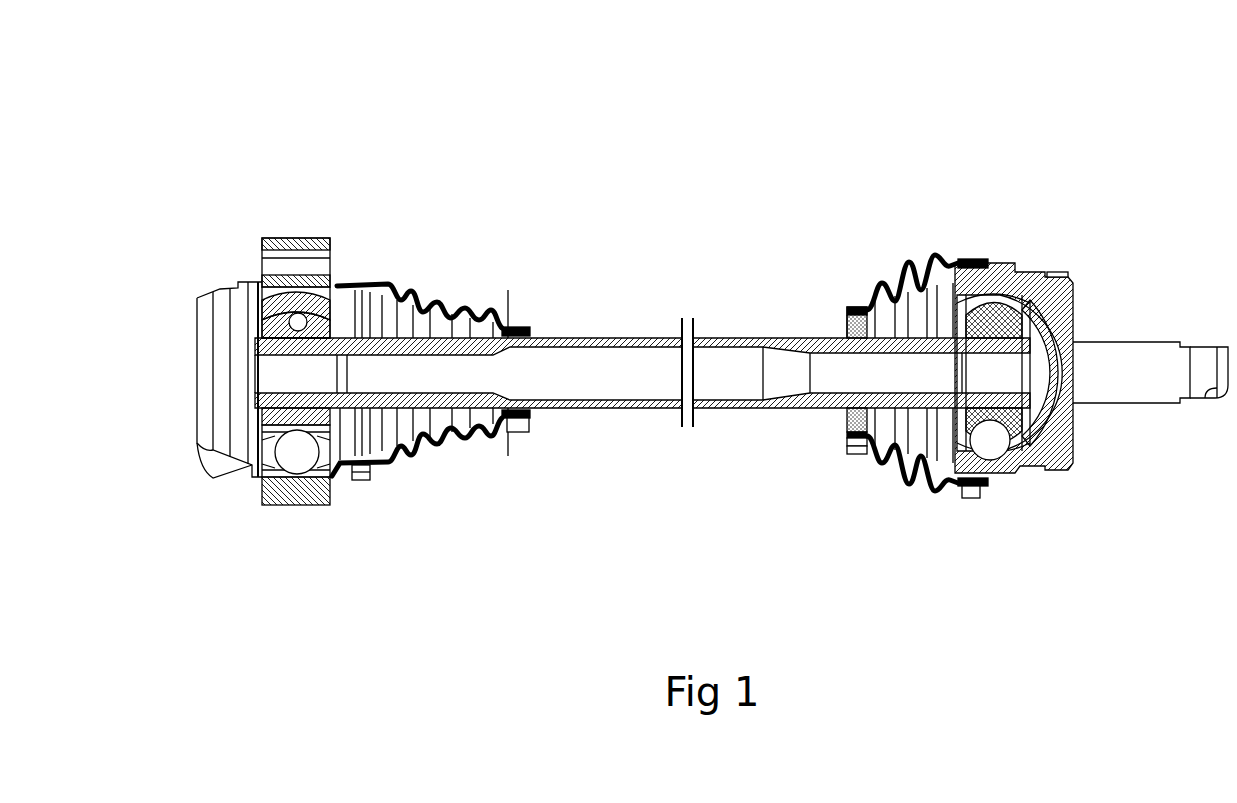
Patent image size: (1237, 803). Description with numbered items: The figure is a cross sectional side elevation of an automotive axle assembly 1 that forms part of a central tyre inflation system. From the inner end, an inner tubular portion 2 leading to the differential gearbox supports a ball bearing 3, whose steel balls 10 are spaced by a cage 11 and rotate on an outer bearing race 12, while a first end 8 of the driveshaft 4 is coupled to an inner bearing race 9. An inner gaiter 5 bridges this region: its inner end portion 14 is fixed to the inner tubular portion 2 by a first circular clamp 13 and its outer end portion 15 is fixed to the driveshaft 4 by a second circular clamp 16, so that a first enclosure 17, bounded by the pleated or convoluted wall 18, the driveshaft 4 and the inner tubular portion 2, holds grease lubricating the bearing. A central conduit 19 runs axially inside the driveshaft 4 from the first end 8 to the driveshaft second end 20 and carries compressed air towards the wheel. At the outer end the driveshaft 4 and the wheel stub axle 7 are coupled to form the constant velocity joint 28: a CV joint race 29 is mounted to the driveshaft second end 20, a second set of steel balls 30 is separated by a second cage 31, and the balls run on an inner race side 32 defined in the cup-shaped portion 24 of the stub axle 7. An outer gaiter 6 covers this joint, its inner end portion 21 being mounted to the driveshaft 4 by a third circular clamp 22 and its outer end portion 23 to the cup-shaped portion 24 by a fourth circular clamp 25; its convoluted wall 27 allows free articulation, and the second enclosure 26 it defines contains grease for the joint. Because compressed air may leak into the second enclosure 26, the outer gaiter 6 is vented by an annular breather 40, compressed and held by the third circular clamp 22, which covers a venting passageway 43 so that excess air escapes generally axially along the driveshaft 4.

The automotive axle assembly 1 is at (719, 100).
The inner tubular portion 2 is at (220, 296).
The ball bearing 3 is at (297, 322).
The driveshaft 4 is at (655, 337).
The inner gaiter 5 is at (428, 296).
The outer gaiter 6 is at (877, 306).
The wheel stub axle 7 is at (1147, 338).
The first end 8 is at (262, 410).
The inner bearing race 9 is at (337, 330).
The steel balls 10 is at (296, 442).
The cage 11 is at (331, 289).
The outer bearing race 12 is at (282, 508).
The first circular clamp 13 is at (362, 481).
The inner end portion 14 is at (384, 472).
The outer end portion 15 is at (510, 302).
The second circular clamp 16 is at (517, 434).
The first enclosure 17 is at (417, 470).
The pleated or convoluted wall 18 is at (463, 440).
The central conduit 19 is at (590, 365).
The driveshaft second end 20 is at (1071, 379).
The inner end portion 21 is at (849, 272).
The third circular clamp 22 is at (856, 464).
The outer end portion 23 is at (963, 240).
The cup-shaped portion 24 is at (1058, 272).
The fourth circular clamp 25 is at (970, 499).
The second enclosure 26 is at (912, 373).
The wall 27 is at (922, 258).
The constant velocity joint 28 is at (1043, 505).
The CV joint race 29 is at (1027, 416).
The second set of steel balls 30 is at (990, 440).
The second cage 31 is at (998, 322).
The inner race side 32 is at (968, 458).
The annular breather 40 is at (805, 436).
The venting passageway 43 is at (837, 428).